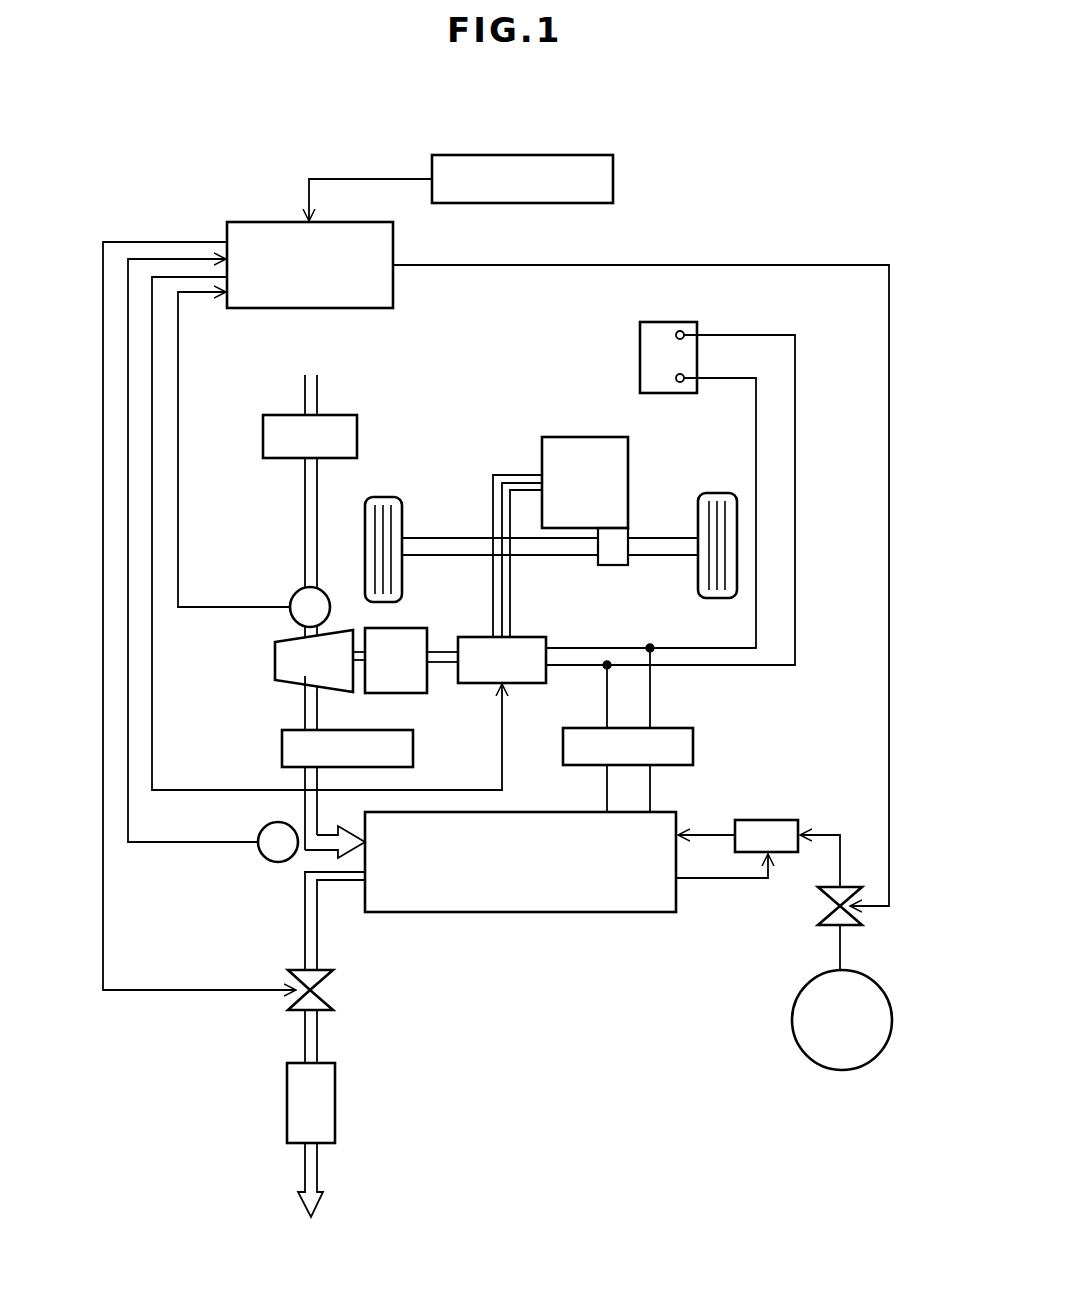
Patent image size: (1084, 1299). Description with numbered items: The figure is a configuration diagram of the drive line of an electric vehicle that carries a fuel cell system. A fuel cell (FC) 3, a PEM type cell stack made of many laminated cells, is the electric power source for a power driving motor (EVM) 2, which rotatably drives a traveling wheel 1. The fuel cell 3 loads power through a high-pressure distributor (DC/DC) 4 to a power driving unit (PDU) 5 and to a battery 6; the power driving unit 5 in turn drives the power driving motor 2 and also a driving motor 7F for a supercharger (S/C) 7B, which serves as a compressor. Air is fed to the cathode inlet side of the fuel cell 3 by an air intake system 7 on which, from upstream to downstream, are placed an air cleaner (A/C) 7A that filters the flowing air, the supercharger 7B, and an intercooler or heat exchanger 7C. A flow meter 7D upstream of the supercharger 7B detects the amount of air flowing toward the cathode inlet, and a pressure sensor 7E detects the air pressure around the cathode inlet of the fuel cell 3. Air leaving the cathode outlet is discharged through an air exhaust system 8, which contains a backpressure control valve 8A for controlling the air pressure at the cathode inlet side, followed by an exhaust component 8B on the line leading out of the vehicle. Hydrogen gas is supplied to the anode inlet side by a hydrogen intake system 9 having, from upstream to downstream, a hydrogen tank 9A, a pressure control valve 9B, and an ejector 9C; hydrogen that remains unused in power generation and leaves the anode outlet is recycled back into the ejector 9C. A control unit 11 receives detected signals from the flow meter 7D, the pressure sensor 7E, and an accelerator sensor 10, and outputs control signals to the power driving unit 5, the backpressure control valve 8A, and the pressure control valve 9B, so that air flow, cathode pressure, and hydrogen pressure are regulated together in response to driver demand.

The traveling wheel 1 is at (385, 497).
The power driving motor 2 is at (563, 437).
The fuel cell 3 is at (520, 912).
The high-pressure distributor 4 is at (693, 745).
The power driving unit 5 is at (528, 637).
The battery 6 is at (640, 352).
The air intake system 7 is at (296, 485).
The air cleaner 7A is at (285, 415).
The supercharger 7B is at (275, 658).
The intercooler 7C is at (282, 745).
The flow meter 7D is at (300, 590).
The pressure sensor 7E is at (278, 862).
The driving motor 7F is at (410, 693).
The air exhaust system 8 is at (298, 918).
The backpressure control valve 8A is at (325, 985).
The exhaust diluter / muffler 8B is at (335, 1100).
The hydrogen intake system 9 is at (832, 826).
The hydrogen tank 9A is at (792, 1020).
The pressure control valve 9B is at (820, 895).
The ejector 9C is at (768, 818).
The accelerator sensor 10 is at (613, 178).
The control unit 11 is at (262, 222).